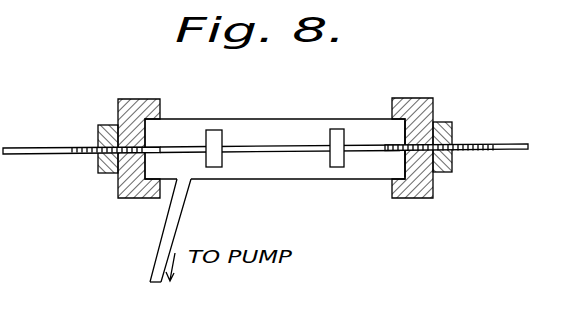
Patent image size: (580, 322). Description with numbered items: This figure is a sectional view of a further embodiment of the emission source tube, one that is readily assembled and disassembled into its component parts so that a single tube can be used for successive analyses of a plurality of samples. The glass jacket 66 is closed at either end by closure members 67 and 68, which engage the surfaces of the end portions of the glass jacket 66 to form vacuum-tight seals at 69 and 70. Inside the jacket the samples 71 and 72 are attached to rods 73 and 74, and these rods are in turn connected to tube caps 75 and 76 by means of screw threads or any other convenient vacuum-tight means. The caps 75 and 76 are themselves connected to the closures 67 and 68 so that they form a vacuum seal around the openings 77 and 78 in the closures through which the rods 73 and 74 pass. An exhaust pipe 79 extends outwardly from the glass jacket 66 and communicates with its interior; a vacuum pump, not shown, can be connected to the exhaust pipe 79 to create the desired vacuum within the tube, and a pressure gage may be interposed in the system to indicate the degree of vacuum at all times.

The glass jacket 66 is at (327, 117).
The closure member 67 is at (432, 100).
The closure member 68 is at (138, 113).
The vacuum-tight seal 69 is at (392, 182).
The vacuum-tight seal 70 is at (172, 187).
The sample 71 is at (330, 152).
The sample 72 is at (222, 152).
The rod 73 is at (372, 150).
The rod 74 is at (181, 147).
The tube cap 75 is at (453, 127).
The tube cap 76 is at (100, 172).
The opening 77 is at (413, 155).
The opening 78 is at (100, 157).
The exhaust pipe 79 is at (149, 273).